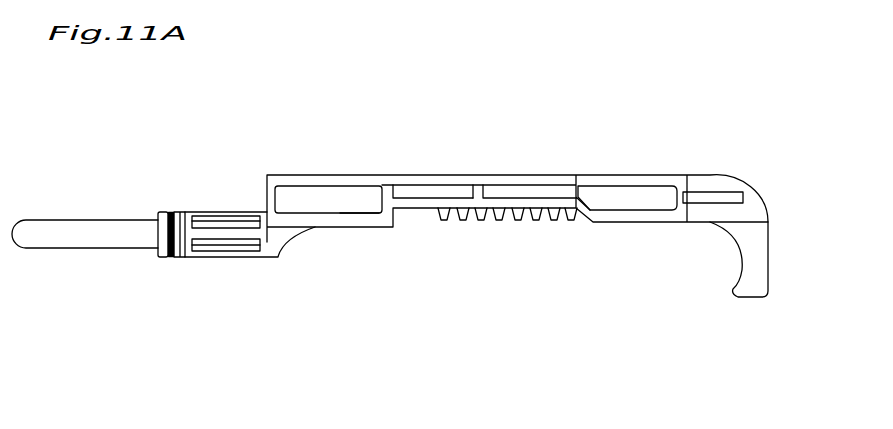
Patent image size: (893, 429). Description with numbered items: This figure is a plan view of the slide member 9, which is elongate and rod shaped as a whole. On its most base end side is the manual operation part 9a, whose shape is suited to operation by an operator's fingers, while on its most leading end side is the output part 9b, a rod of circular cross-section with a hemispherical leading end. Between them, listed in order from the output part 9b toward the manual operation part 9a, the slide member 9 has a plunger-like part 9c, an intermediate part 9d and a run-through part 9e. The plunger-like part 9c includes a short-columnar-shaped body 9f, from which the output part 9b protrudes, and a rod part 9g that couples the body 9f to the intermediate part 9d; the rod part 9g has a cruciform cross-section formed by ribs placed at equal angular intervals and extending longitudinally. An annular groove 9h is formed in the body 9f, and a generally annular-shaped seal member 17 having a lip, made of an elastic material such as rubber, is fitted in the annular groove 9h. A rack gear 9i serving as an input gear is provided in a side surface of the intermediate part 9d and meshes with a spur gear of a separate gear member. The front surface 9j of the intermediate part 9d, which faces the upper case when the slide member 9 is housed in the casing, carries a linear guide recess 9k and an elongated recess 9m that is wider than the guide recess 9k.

The slide member 9 is at (667, 133).
The manual operation part 9a is at (744, 262).
The output part 9b is at (62, 250).
The plunger-like part 9c is at (234, 289).
The intermediate part 9d is at (435, 181).
The run-through part 9e is at (623, 174).
The short-columnar-shaped body 9f is at (182, 259).
The rod part 9g is at (250, 269).
The annular groove 9h is at (170, 258).
The rack gear 9i is at (506, 221).
The front surface 9j is at (323, 182).
The guide recess 9k is at (528, 190).
The elongated recess 9m is at (360, 197).
The seal member 17 is at (172, 212).